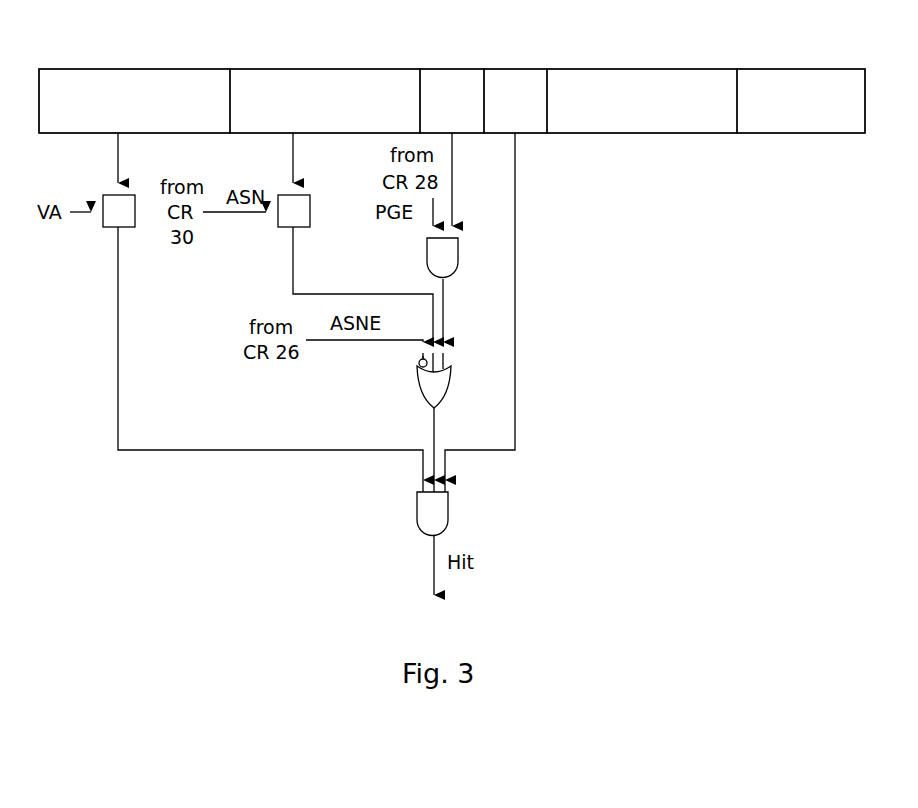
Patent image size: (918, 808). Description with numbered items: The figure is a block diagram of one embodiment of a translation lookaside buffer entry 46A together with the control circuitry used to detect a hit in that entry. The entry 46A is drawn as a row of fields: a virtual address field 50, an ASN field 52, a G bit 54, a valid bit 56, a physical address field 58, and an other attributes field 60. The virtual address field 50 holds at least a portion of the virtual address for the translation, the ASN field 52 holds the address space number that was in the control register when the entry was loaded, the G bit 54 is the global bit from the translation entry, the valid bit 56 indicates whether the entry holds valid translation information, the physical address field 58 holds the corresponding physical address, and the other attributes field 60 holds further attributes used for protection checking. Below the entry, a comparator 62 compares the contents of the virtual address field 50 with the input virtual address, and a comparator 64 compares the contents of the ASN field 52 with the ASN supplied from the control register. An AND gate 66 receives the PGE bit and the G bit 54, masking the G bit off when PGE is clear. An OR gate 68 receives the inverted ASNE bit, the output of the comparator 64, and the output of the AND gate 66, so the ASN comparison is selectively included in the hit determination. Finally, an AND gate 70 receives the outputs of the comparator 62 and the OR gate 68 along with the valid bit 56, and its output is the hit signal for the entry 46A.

The TLB entry 46A is at (772, 160).
The virtual address field 50 is at (133, 69).
The ASN field 52 is at (328, 69).
The G bit 54 is at (452, 69).
The valid bit 56 is at (515, 69).
The physical address field 58 is at (643, 69).
The other attributes field 60 is at (802, 69).
The comparator 62 is at (103, 227).
The comparator 64 is at (278, 227).
The AND gate 66 is at (438, 260).
The OR gate 68 is at (430, 388).
The AND gate 70 is at (427, 513).